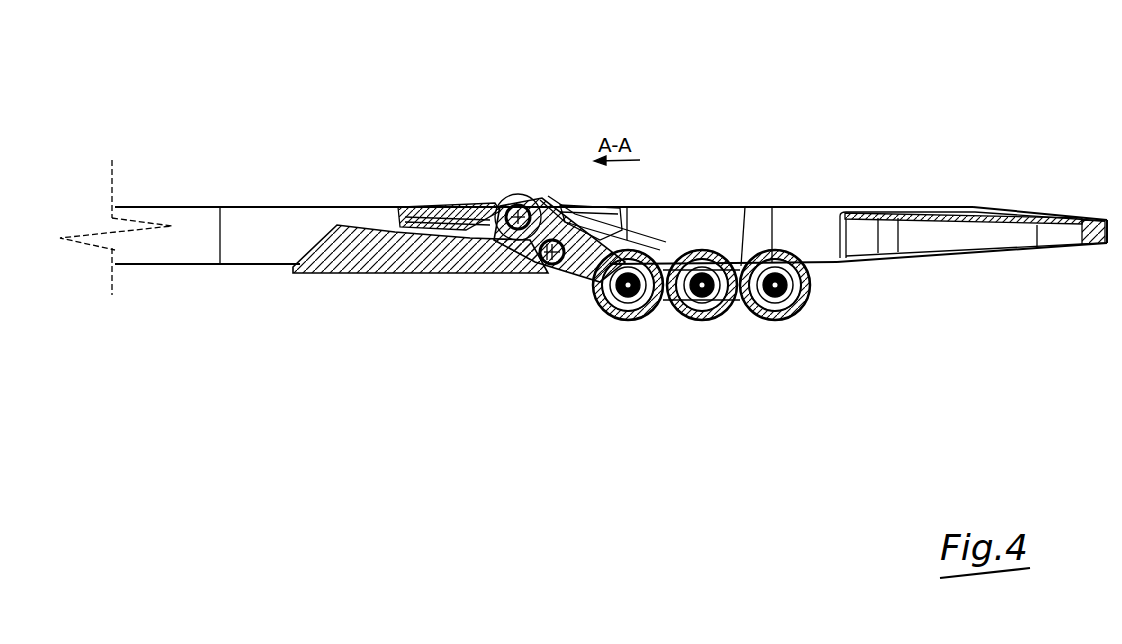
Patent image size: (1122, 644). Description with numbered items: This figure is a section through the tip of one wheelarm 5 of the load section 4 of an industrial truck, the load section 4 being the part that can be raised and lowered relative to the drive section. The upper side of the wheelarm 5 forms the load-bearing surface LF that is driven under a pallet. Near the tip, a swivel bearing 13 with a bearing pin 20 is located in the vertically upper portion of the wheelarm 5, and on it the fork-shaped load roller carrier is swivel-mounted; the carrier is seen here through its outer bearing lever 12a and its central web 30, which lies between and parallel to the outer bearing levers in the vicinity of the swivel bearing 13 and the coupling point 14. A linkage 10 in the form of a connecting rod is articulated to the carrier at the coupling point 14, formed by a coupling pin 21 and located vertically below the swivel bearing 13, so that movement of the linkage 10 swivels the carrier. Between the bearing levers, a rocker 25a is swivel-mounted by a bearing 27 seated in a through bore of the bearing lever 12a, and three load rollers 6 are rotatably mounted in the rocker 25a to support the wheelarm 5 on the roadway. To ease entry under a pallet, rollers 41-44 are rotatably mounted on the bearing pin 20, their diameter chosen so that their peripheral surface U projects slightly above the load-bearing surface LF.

The load section 4 is at (1037, 106).
The wheelarm 5 is at (242, 213).
The load-bearing surface LF is at (306, 207).
The linkage 10 is at (326, 265).
The rollers 41-44 is at (503, 202).
The peripheral surface U is at (514, 200).
The bearing pin 20 is at (523, 200).
The swivel bearing 13 is at (542, 130).
The central web 30 is at (541, 200).
The coupling pin 21 is at (545, 262).
The coupling point 14 is at (518, 360).
The bearing lever 12a is at (623, 242).
The rocker 25a is at (745, 207).
The load roller 6 is at (683, 314).
The bearing 27 is at (690, 318).